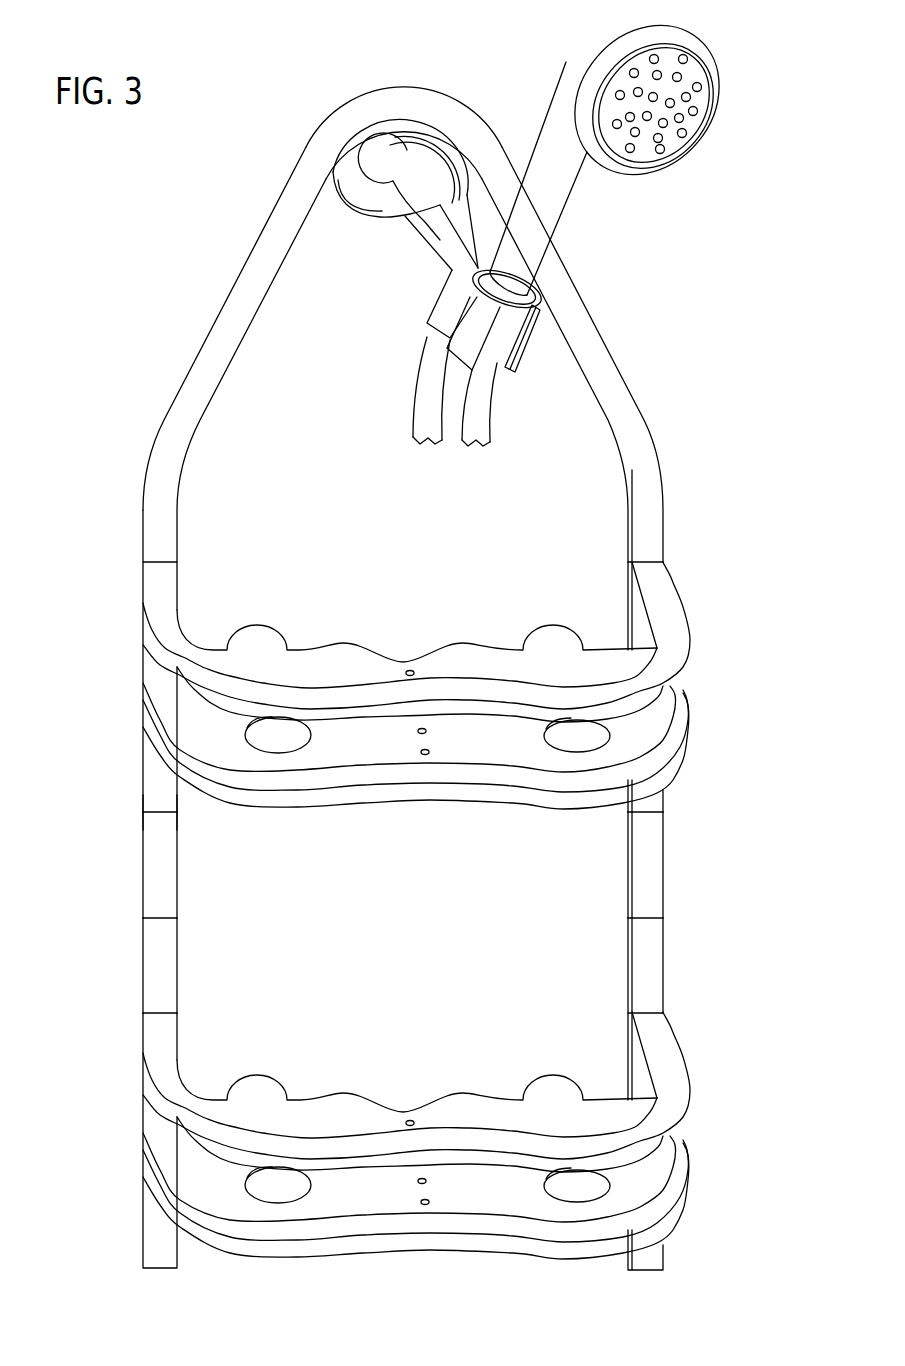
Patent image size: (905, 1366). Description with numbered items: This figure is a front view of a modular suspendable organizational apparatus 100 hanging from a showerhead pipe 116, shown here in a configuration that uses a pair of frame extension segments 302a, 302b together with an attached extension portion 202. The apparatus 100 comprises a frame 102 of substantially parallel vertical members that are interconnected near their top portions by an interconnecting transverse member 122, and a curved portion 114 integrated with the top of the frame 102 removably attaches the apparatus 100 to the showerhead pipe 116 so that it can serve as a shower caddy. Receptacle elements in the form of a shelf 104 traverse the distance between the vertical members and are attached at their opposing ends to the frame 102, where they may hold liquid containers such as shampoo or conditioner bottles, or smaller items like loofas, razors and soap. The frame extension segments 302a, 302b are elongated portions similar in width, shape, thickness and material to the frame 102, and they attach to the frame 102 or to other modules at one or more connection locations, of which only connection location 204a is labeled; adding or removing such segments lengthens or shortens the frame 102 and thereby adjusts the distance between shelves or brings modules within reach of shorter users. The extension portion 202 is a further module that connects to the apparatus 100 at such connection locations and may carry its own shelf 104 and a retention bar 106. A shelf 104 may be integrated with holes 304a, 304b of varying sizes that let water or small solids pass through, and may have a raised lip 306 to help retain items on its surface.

The modular suspendable organizational apparatus 100 is at (662, 290).
The frame 102 is at (167, 530).
The shelf 104 is at (208, 1165).
The retention bar 106 is at (163, 1037).
The curved portion 114 is at (401, 105).
The showerhead pipe 116 is at (398, 155).
The interconnecting transverse member 122 is at (198, 312).
The extension portion 202 is at (163, 966).
The connection location 204a is at (158, 810).
The frame extension segment 302a is at (163, 867).
The frame extension segment 302b is at (648, 863).
The hole 304a is at (298, 1193).
The hole 304b is at (428, 1182).
The raised lip 306 is at (223, 1208).